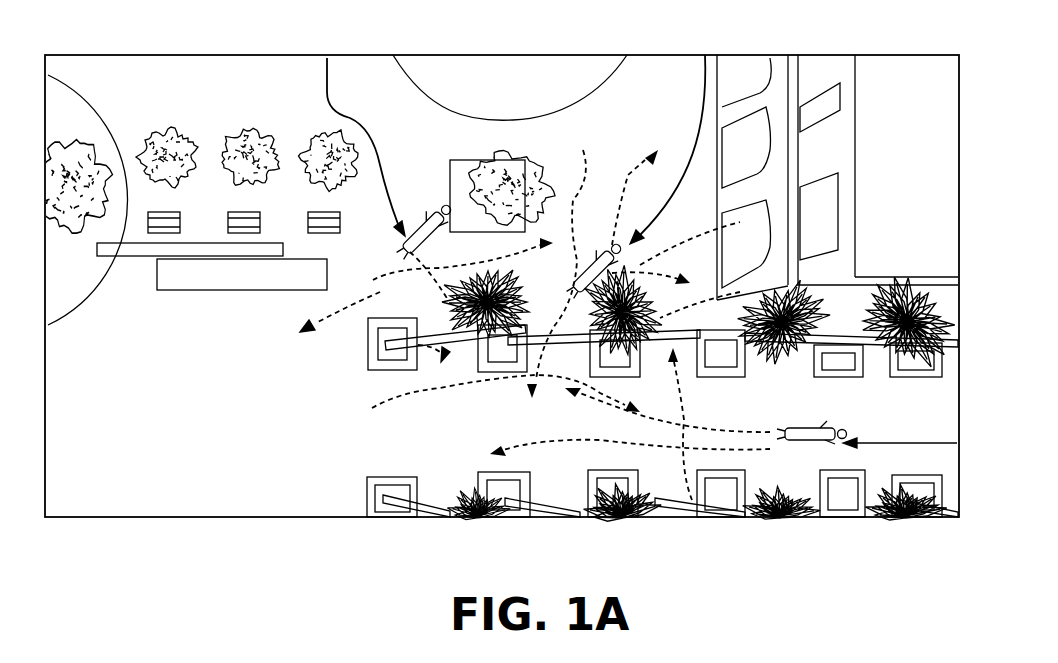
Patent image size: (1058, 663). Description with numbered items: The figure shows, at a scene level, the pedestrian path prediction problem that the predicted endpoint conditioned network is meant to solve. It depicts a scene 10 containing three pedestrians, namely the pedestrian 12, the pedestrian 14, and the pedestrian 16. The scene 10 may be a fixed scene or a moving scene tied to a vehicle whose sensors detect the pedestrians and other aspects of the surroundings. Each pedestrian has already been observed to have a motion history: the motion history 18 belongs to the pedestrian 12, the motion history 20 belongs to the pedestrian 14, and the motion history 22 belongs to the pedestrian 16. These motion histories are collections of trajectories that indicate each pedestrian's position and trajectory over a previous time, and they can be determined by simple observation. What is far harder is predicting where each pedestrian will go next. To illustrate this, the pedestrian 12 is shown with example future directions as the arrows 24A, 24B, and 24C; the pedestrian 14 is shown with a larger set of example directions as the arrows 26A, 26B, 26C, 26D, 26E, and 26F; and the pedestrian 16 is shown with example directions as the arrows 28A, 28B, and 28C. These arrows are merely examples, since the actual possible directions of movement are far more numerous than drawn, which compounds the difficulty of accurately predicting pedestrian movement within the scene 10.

The scene 10 is at (592, 55).
The pedestrian 12 is at (422, 198).
The pedestrian 14 is at (593, 248).
The pedestrian 16 is at (822, 500).
The motion history 18 is at (335, 97).
The motion history 20 is at (717, 90).
The motion history 22 is at (935, 500).
The arrow 24A is at (454, 275).
The arrow 24B is at (400, 352).
The arrow 24C is at (373, 280).
The arrow 26A is at (583, 150).
The arrow 26B is at (632, 165).
The arrow 26C is at (740, 222).
The arrow 26D is at (520, 375).
The arrow 26E is at (740, 292).
The arrow 26F is at (372, 408).
The arrow 28A is at (678, 380).
The arrow 28B is at (723, 518).
The arrow 28C is at (653, 520).